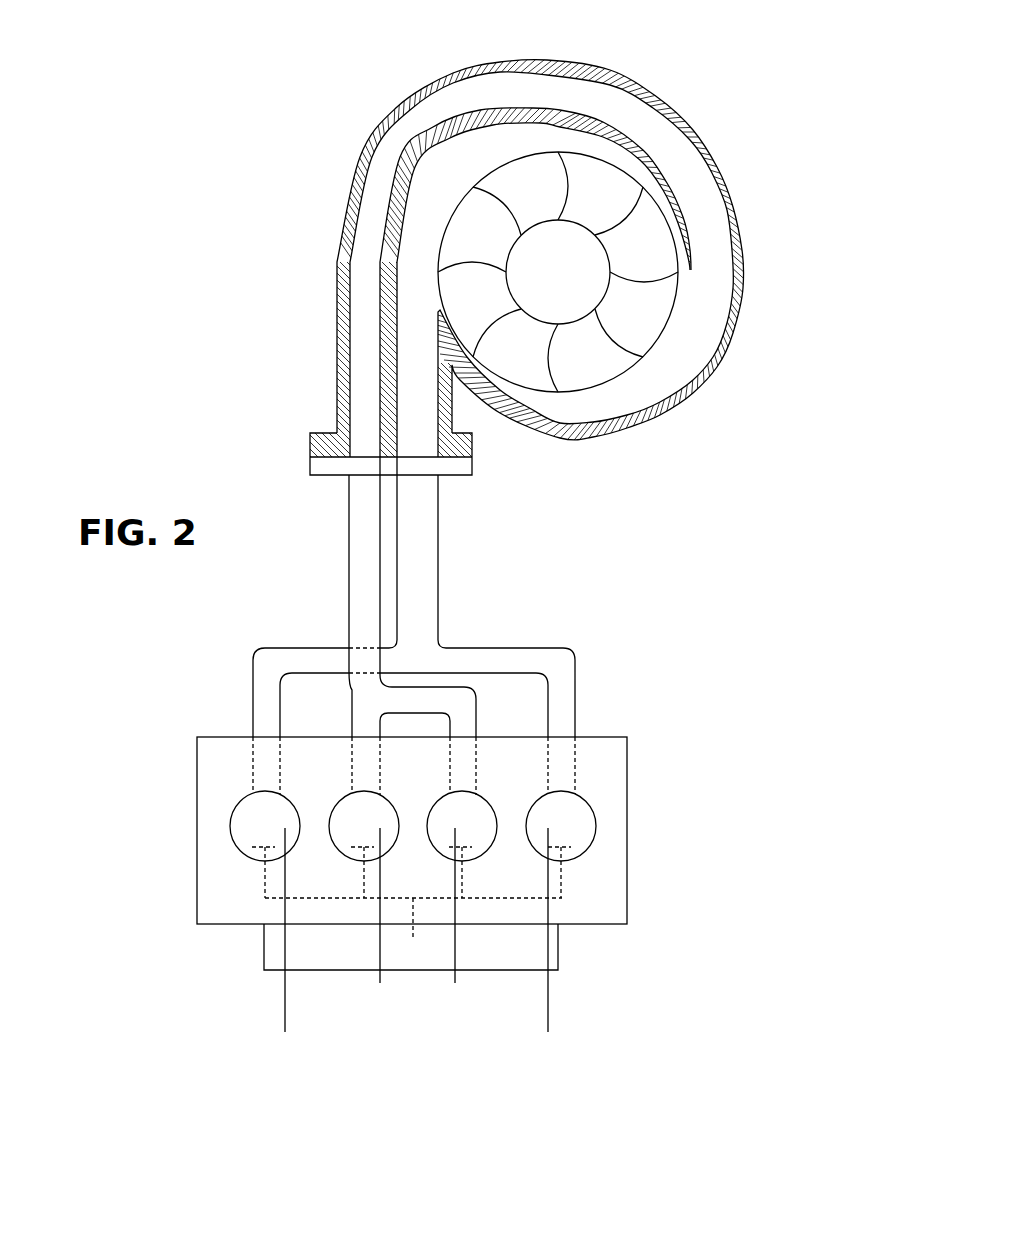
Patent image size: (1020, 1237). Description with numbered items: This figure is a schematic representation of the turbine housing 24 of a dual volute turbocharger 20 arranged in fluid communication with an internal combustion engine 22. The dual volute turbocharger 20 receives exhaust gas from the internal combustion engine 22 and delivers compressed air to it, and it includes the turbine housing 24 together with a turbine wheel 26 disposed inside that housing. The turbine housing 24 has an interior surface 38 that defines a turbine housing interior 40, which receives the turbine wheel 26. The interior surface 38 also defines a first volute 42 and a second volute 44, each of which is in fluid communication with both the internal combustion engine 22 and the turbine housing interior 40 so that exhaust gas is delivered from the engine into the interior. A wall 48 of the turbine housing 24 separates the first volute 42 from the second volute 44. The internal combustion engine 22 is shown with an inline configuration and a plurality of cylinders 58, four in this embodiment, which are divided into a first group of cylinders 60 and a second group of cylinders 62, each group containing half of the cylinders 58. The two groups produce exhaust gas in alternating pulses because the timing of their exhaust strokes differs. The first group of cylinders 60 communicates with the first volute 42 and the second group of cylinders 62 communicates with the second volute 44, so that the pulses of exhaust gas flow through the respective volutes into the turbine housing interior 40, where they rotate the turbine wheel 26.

The dual volute turbocharger 20 is at (724, 88).
The internal combustion engine 22 is at (627, 838).
The turbine housing 24 is at (378, 147).
The turbine wheel 26 is at (645, 312).
The interior surface 38 is at (500, 87).
The turbine housing interior 40 is at (608, 402).
The first volute 42 is at (363, 365).
The second volute 44 is at (417, 406).
The wall 48 is at (388, 303).
The cylinders 58 is at (258, 827).
The first group of cylinders 60 is at (455, 983).
The second group of cylinders 62 is at (285, 1032).